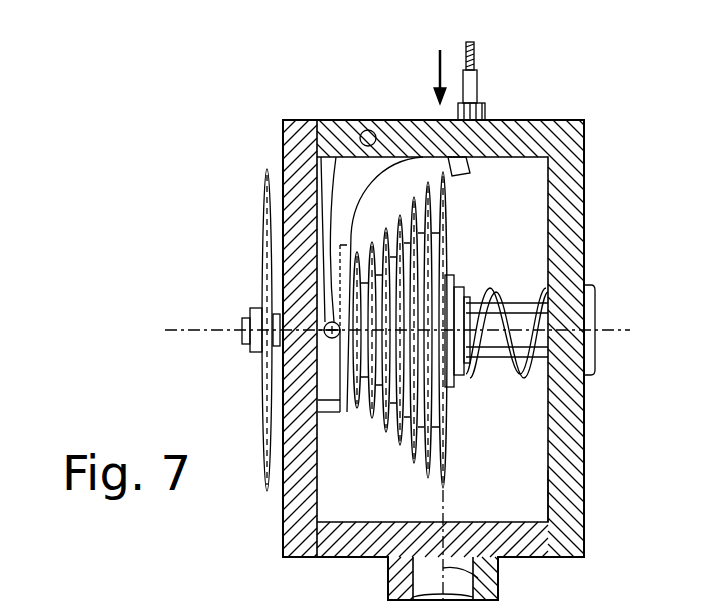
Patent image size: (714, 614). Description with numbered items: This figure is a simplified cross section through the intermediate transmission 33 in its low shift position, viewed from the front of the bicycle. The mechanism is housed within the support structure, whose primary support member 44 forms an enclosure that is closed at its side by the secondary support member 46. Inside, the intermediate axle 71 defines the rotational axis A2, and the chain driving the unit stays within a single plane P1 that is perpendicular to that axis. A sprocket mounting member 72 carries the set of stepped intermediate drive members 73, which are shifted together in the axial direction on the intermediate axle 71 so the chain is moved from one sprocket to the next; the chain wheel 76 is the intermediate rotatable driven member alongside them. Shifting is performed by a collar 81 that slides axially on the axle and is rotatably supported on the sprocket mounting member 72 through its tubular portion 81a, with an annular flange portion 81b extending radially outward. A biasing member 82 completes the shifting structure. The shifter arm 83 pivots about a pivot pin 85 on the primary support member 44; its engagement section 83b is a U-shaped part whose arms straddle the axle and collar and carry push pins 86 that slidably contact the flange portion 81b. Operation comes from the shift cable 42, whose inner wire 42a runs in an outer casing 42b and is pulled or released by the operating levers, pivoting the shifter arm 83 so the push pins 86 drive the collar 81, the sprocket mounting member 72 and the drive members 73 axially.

The intermediate transmission 33 is at (504, 463).
The shift cable 42 is at (523, 103).
The inner wire 42a is at (477, 48).
The outer casing 42b is at (482, 84).
The primary support member 44 is at (558, 120).
The secondary support member 46 is at (283, 142).
The intermediate axle 71 is at (493, 362).
The sprocket mounting member 72 is at (470, 300).
The intermediate drive members 73 is at (398, 458).
The intermediate rotatable driven member or chain wheel 76 is at (267, 400).
The collar 81 is at (317, 458).
The tubular portion 81a is at (327, 380).
The annular flange portion 81b is at (329, 408).
The biasing member 82 is at (496, 275).
The shifter arm 83 is at (325, 152).
The engagement section 83b is at (358, 204).
The pivot pin 85 is at (368, 130).
The push pin 86 is at (325, 323).
The rotational axis A2 is at (172, 330).
The plane P1 is at (498, 591).